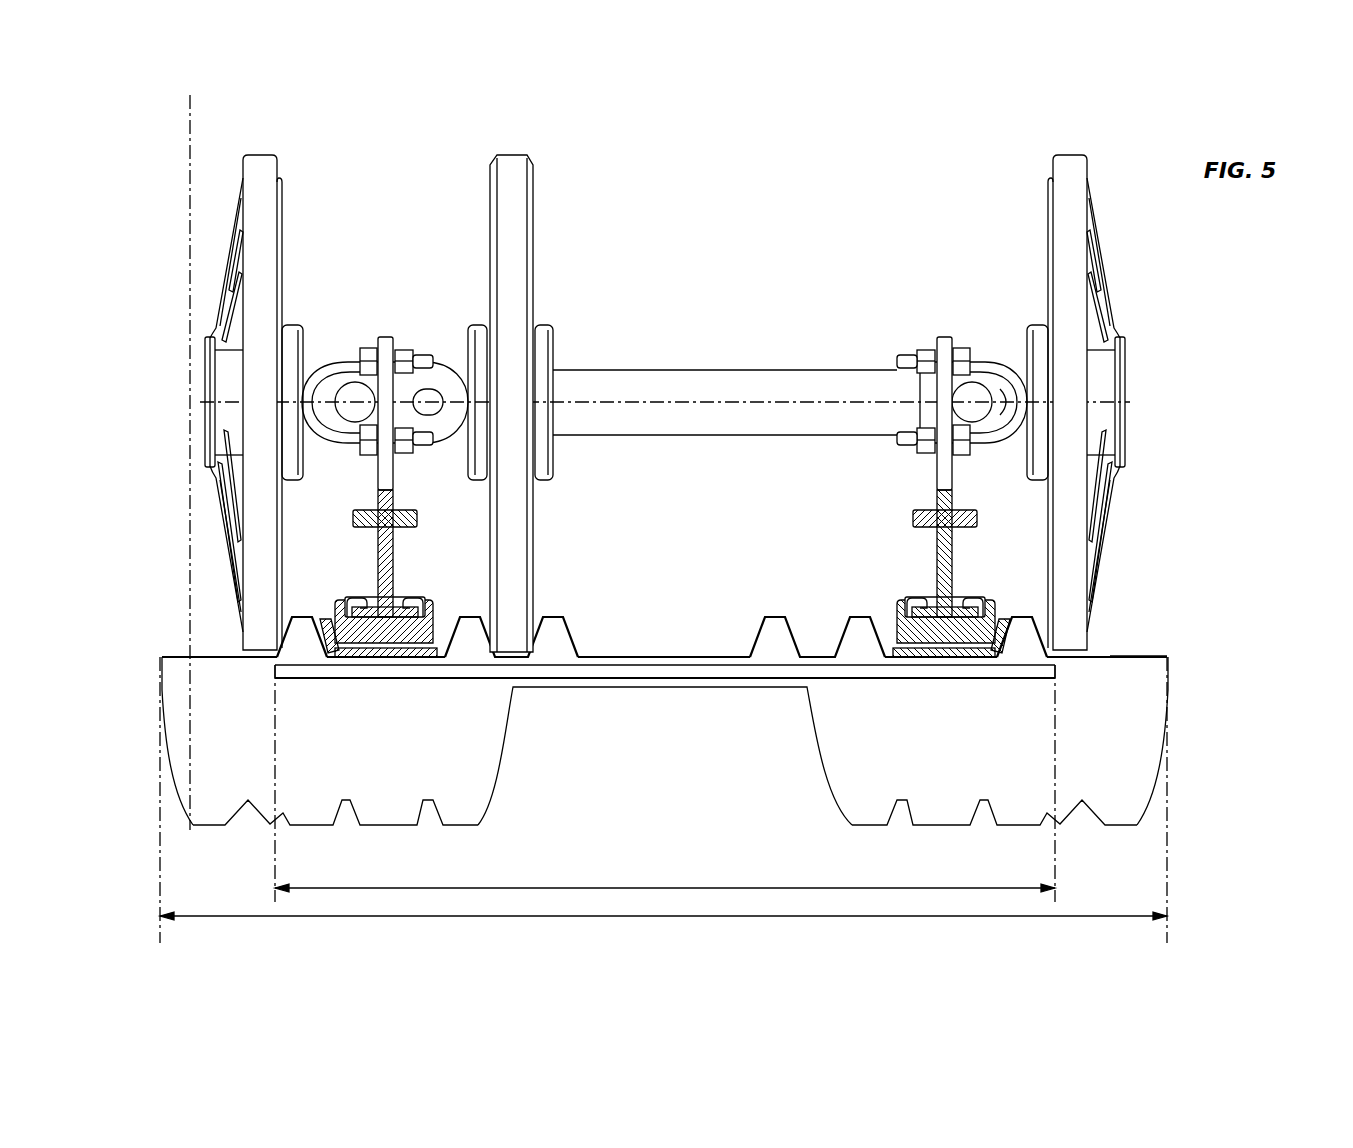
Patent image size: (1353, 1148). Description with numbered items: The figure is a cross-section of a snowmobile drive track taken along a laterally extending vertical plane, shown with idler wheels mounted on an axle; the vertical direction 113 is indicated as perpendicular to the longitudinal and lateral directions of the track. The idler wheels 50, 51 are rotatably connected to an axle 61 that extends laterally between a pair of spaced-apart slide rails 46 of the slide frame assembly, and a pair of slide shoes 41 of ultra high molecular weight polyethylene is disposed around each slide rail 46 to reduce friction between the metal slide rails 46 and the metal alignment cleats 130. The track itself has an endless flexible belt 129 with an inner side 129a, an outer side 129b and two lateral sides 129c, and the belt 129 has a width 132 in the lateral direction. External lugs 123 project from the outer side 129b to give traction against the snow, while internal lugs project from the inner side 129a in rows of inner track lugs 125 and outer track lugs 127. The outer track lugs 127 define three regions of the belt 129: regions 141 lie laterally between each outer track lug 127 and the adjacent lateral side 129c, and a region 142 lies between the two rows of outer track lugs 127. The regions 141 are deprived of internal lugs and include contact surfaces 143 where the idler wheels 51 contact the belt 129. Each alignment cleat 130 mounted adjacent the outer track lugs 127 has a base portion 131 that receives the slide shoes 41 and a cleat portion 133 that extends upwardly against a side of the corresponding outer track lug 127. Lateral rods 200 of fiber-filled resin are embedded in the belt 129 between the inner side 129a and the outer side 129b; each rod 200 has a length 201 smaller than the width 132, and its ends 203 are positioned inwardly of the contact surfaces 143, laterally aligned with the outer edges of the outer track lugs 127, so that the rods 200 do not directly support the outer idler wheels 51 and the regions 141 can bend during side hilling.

The vertical direction 113 is at (186, 136).
The idler wheel 51 is at (265, 167).
The idler wheel 50 is at (512, 165).
The axle 61 is at (772, 385).
The slide rail 46 is at (388, 557).
The slide shoe 41 is at (425, 603).
The cleat portion 133 is at (345, 605).
The outer track lug 127 is at (298, 615).
The inner track lug 125 is at (470, 617).
The region 142 is at (665, 657).
The inner side 129a is at (1105, 650).
The region 141 is at (208, 657).
The lateral side 129c is at (165, 673).
The endless flexible belt 129 is at (1148, 672).
The contact surface 143 is at (260, 658).
The end of rod 203 is at (280, 672).
The alignment cleat 130 is at (333, 652).
The base portion 131 is at (428, 658).
The lateral rod 200 is at (668, 678).
The outer side 129b is at (537, 688).
The external lug 123 is at (835, 760).
The width 132 is at (573, 913).
The length 201 is at (685, 888).